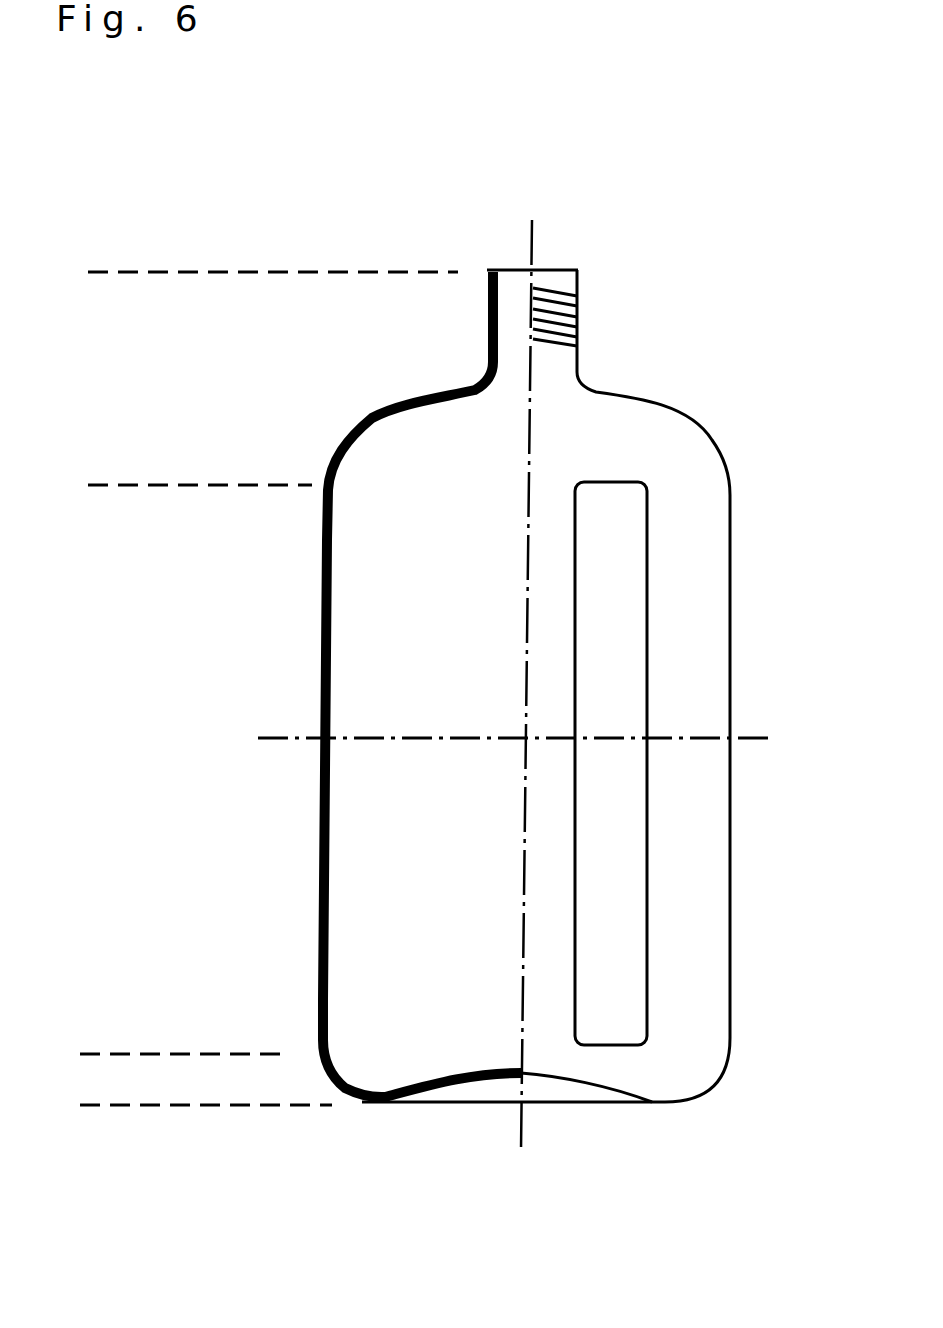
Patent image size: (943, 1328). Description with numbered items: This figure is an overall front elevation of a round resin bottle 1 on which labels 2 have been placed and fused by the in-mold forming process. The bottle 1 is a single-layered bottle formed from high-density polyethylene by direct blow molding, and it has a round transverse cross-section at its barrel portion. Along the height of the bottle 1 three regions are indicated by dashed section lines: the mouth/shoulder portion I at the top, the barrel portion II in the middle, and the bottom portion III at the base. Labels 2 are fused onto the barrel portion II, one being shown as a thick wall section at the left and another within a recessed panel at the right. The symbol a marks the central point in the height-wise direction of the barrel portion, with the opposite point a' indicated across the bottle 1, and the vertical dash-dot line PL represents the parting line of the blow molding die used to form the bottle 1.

The resin bottle 1 is at (737, 350).
The label 2 is at (320, 657).
The mouth/shoulder portion I is at (273, 378).
The barrel portion II is at (182, 967).
The bottom portion III is at (206, 1082).
The central point in the height-wise direction of the barrel portion a is at (520, 739).
The parting line of a blow molding die PL is at (513, 708).